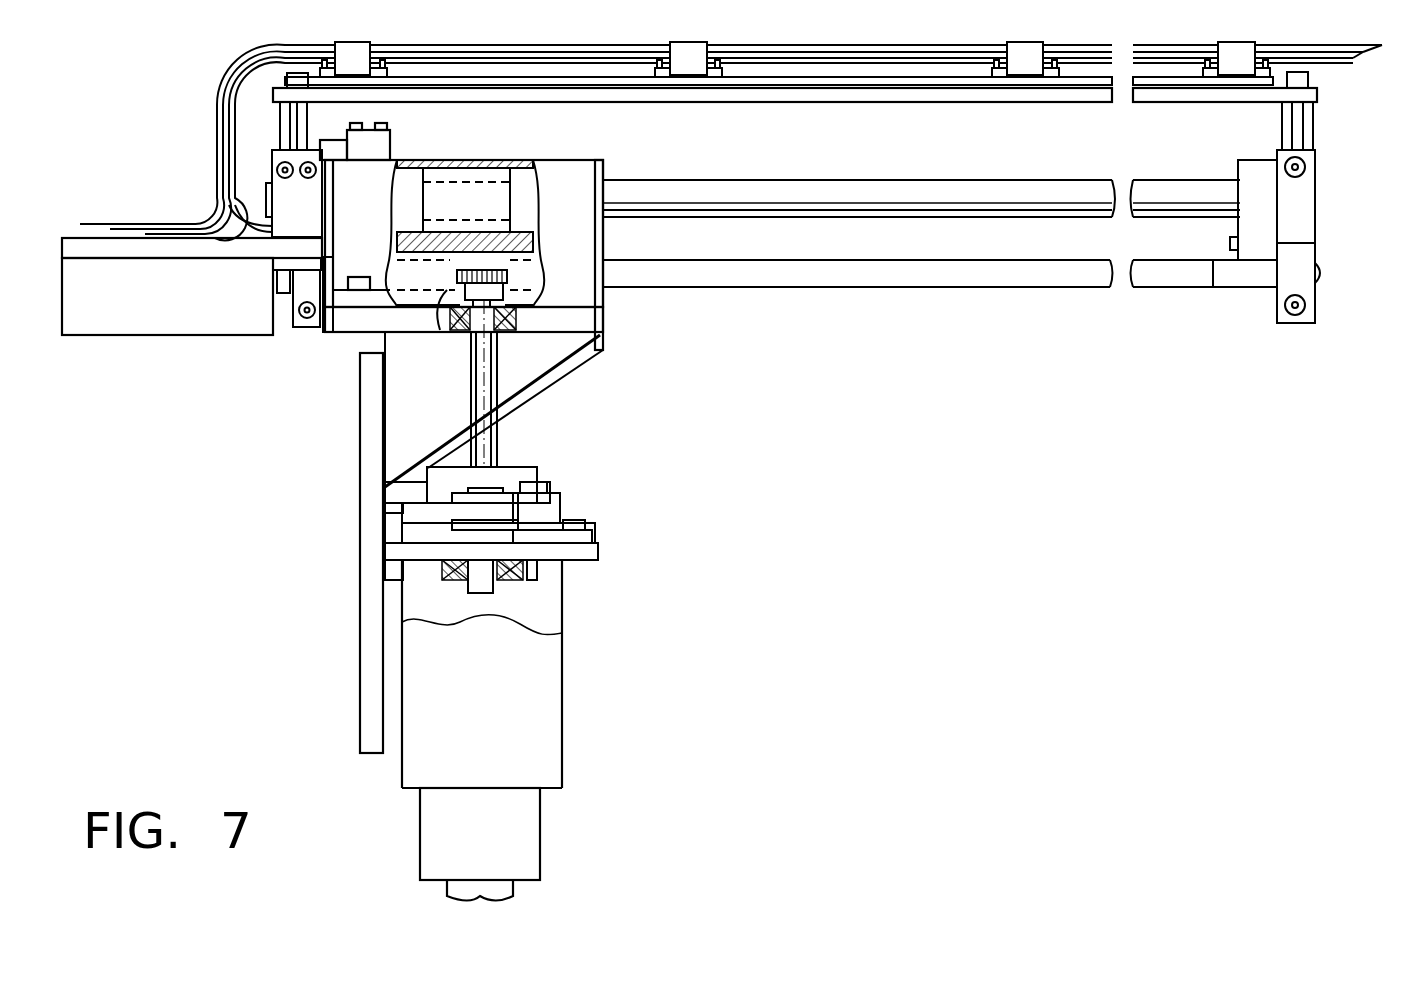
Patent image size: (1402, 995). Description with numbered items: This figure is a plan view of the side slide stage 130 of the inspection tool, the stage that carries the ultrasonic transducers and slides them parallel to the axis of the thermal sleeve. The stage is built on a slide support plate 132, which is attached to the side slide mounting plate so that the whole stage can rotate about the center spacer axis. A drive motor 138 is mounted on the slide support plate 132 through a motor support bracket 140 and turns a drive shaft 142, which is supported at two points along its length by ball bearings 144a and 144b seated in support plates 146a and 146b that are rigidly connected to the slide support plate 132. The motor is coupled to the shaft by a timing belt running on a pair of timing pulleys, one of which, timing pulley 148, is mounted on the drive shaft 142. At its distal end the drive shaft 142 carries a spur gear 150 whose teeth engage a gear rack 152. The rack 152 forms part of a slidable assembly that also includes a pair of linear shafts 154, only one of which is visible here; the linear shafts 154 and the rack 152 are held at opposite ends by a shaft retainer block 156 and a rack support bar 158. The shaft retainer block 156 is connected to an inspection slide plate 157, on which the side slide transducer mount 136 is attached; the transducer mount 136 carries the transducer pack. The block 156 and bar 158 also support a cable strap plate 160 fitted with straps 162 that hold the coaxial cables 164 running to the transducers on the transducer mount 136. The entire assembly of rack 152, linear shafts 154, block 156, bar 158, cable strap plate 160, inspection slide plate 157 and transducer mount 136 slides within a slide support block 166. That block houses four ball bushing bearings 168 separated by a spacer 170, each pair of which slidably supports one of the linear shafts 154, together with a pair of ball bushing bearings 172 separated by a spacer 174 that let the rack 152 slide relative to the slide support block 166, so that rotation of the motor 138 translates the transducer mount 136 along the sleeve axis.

The side slide stage 130 is at (978, 413).
The slide support plate 132 is at (360, 397).
The side slide transducer mount 136 is at (123, 337).
The drive motor 138 is at (562, 667).
The motor support bracket 140 is at (598, 553).
The drive shaft 142 is at (470, 375).
The ball bearing 144a is at (500, 335).
The ball bearing 144b is at (500, 583).
The support plate 146a is at (603, 318).
The support plate 146b is at (540, 570).
The timing pulley 148 is at (403, 513).
The spur gear 150 is at (447, 295).
The gear rack 152 is at (980, 278).
The linear shafts 154 is at (993, 183).
The shaft retainer block 156 is at (283, 202).
The inspection slide plate 157 is at (128, 253).
The rack support bar 158 is at (1317, 300).
The cable strap plate 160 is at (880, 100).
The straps 162 is at (355, 68).
The coaxial cables 164 is at (530, 40).
The slide support block 166 is at (592, 143).
The ball bushing bearings 168 is at (407, 180).
The spacer 170 is at (527, 183).
The ball bushing bearings 172 is at (397, 243).
The spacer 174 is at (410, 290).